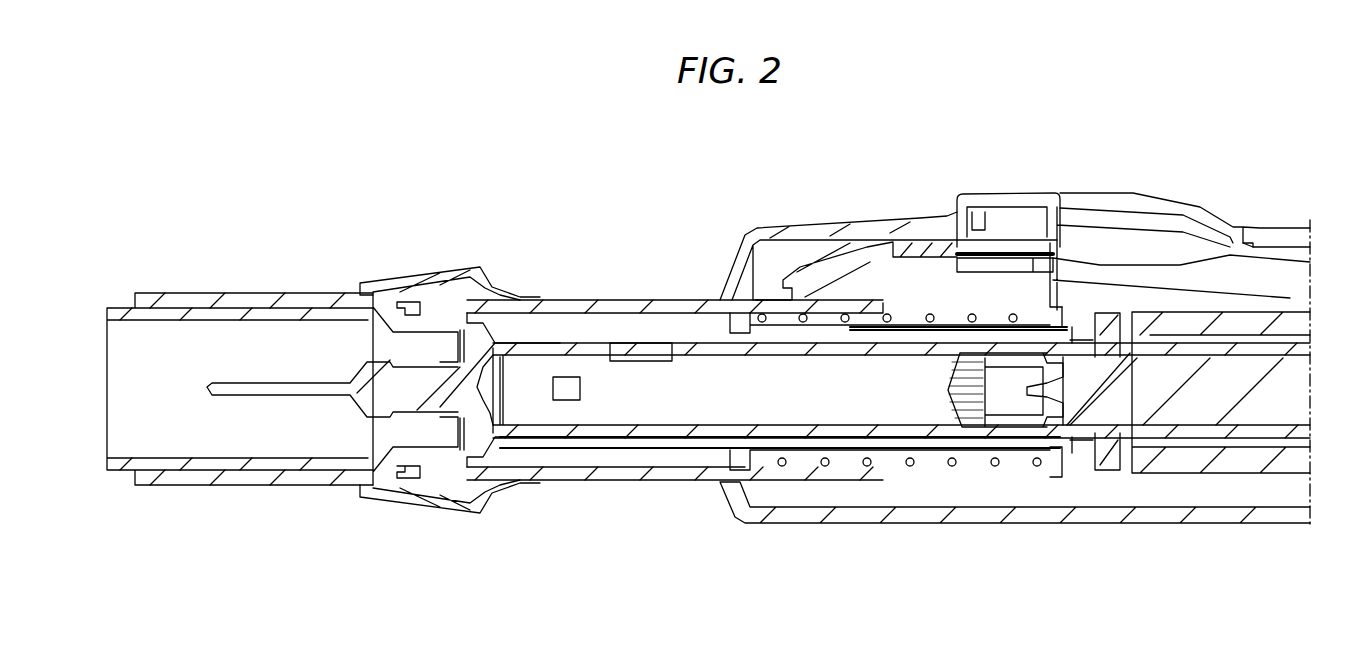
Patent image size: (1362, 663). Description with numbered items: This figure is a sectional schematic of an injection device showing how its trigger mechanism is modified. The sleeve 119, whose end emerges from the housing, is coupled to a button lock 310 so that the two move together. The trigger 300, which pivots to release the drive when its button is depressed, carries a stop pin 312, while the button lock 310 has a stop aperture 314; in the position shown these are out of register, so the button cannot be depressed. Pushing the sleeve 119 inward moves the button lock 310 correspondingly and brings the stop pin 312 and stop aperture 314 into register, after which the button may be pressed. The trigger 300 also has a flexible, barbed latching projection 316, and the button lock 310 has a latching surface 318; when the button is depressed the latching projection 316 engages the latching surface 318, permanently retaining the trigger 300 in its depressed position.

The sleeve 119 is at (240, 305).
The trigger 300 is at (1263, 247).
The button lock 310 is at (780, 255).
The stop pin 312 is at (957, 207).
The stop aperture 314 is at (913, 250).
The latching projection 316 is at (1053, 225).
The latching surface 318 is at (987, 252).